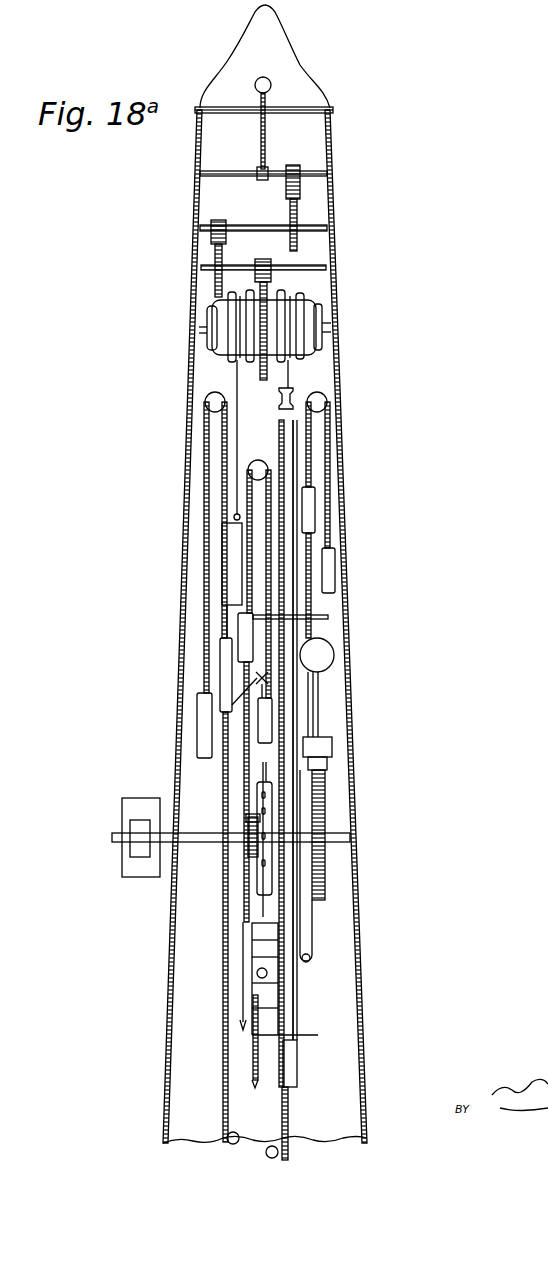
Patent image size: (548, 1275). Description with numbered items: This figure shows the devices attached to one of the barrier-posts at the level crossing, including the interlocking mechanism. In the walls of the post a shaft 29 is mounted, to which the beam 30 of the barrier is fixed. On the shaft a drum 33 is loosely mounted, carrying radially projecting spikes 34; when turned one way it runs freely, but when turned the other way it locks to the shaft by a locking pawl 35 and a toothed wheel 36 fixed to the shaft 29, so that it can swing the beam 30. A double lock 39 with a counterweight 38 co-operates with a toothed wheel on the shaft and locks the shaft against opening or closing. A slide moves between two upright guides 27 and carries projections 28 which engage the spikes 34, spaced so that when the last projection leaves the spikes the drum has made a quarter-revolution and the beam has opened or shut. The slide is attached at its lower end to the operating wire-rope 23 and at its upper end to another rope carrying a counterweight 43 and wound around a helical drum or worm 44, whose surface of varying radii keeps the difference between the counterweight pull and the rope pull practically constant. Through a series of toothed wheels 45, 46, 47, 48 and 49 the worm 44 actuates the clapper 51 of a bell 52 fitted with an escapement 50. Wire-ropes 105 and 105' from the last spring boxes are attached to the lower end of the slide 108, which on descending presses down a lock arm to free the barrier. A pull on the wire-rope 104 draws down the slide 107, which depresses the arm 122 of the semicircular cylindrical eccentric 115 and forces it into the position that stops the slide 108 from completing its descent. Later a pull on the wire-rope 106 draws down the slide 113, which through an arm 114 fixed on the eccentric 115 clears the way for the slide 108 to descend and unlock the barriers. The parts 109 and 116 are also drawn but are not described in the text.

The operating wire-rope 23 is at (233, 402).
The upright guides 27 is at (298, 590).
The projections 28 is at (250, 925).
The shaft 29 is at (122, 834).
The beam 30 is at (140, 842).
The drum 33 is at (255, 905).
The spikes 34 is at (260, 766).
The locking pawl 35 is at (246, 820).
The toothed wheel 36 is at (246, 857).
The counterweight 38 is at (331, 644).
The double lock 39 is at (332, 745).
The counterweight 43 is at (235, 558).
The helical drum or worm 44 is at (312, 330).
The toothed wheel 45 is at (266, 293).
The toothed wheel 46 is at (272, 265).
The toothed wheel 47 is at (215, 258).
The toothed wheel 48 is at (214, 225).
The toothed wheel 49 is at (297, 213).
The escapement 50 is at (296, 168).
The clapper 51 is at (255, 81).
The bell 52 is at (288, 71).
The wire-rope 104 is at (243, 1020).
The wire-rope 105 is at (166, 1041).
The wire-rope 105' is at (162, 992).
The wire-rope 106 is at (316, 708).
The slide 107 is at (226, 662).
The slide 108 is at (243, 632).
The weight 109 is at (204, 735).
The slide 113 is at (316, 505).
The arm 114 is at (272, 680).
The cam or eccentric 115 is at (258, 678).
The weight 116 is at (334, 572).
The arm 122 is at (234, 700).